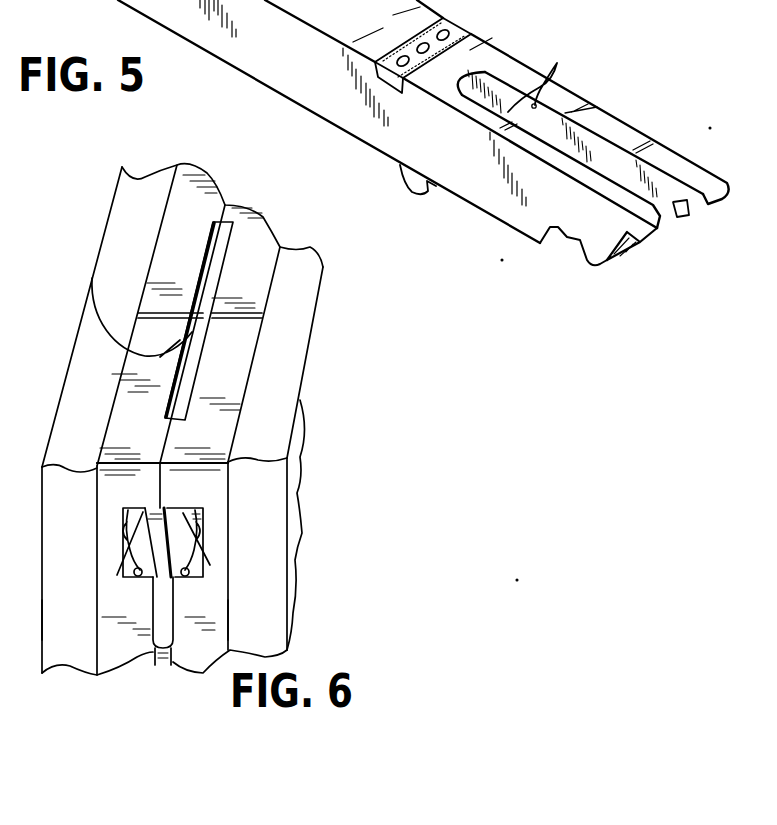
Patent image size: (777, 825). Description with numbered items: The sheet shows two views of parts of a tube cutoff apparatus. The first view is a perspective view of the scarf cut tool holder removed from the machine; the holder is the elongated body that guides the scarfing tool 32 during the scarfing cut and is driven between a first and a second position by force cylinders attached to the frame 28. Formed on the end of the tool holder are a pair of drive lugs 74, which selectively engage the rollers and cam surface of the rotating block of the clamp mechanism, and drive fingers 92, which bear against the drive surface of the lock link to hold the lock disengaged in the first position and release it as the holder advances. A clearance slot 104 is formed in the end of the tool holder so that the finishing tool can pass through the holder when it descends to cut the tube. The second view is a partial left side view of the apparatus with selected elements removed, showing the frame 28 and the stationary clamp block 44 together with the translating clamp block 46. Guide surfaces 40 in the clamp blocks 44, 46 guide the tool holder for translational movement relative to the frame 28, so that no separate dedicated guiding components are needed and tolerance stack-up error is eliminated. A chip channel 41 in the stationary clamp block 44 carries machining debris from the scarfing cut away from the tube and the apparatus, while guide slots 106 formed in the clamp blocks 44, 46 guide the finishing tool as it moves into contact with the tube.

In FIG. 6, the frame 28 is at (82, 630).
In FIG. 5, the scarfing tool 32 is at (428, 187).
In FIG. 6, the guide surfaces 40 is at (183, 578).
In FIG. 6, the chip channel 41 is at (148, 652).
In FIG. 6, the stationary clamp block 44 is at (145, 495).
In FIG. 6, the translating clamp block 46 is at (197, 249).
In FIG. 5, the drive lugs 74 is at (609, 268).
In FIG. 5, the drive fingers 92 is at (698, 204).
In FIG. 5, the clearance slot 104 is at (557, 63).
In FIG. 6, the guide slots 106 is at (205, 260).